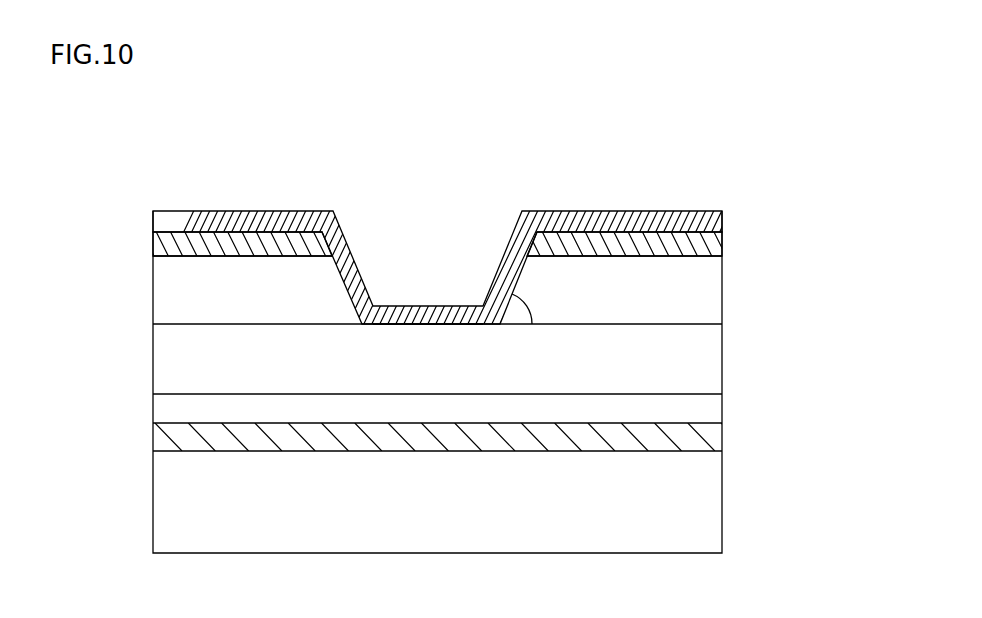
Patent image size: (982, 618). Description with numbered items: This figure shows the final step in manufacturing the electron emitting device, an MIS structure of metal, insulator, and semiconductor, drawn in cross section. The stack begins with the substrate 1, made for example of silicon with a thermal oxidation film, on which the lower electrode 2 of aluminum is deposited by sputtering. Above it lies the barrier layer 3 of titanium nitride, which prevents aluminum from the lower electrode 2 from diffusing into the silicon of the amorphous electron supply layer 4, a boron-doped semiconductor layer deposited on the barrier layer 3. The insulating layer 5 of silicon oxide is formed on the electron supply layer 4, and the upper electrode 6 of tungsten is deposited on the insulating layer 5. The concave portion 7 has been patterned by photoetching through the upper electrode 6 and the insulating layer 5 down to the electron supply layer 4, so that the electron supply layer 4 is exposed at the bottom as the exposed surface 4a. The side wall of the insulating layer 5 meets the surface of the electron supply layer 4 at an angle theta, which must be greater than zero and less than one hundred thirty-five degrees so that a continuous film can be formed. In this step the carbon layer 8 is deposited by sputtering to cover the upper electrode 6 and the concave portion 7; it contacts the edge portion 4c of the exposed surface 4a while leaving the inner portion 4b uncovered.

The substrate 1 is at (703, 500).
The lower electrode 2 is at (702, 437).
The barrier layer 3 is at (700, 410).
The electron supply layer 4 is at (700, 360).
The exposed surface 4a is at (465, 230).
The inner portion 4b is at (428, 307).
The edge portion 4c is at (373, 305).
The insulating layer 5 is at (703, 285).
The upper electrode 6 is at (707, 240).
The concave portion 7 is at (494, 236).
The carbon layer 8 is at (718, 218).